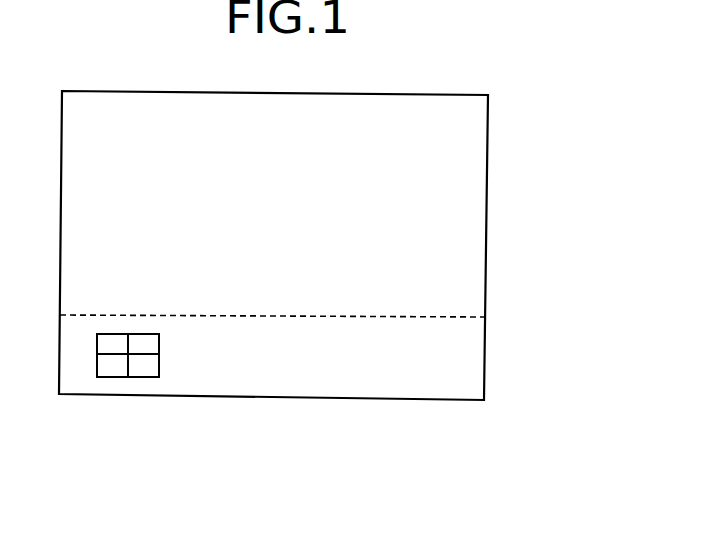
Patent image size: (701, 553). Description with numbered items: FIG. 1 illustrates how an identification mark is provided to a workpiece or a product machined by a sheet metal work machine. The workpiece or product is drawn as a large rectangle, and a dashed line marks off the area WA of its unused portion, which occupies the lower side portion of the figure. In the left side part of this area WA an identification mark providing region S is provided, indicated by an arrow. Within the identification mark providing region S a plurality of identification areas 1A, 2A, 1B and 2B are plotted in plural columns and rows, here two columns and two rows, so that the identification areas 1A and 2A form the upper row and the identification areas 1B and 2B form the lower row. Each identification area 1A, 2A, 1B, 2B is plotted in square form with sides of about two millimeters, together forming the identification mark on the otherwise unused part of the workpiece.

The area of the unused portion WA is at (485, 360).
The identification area 1A is at (108, 333).
The identification area 2A is at (147, 334).
The identification area 1B is at (112, 377).
The identification area 2B is at (138, 377).
The identification mark providing region S is at (172, 343).